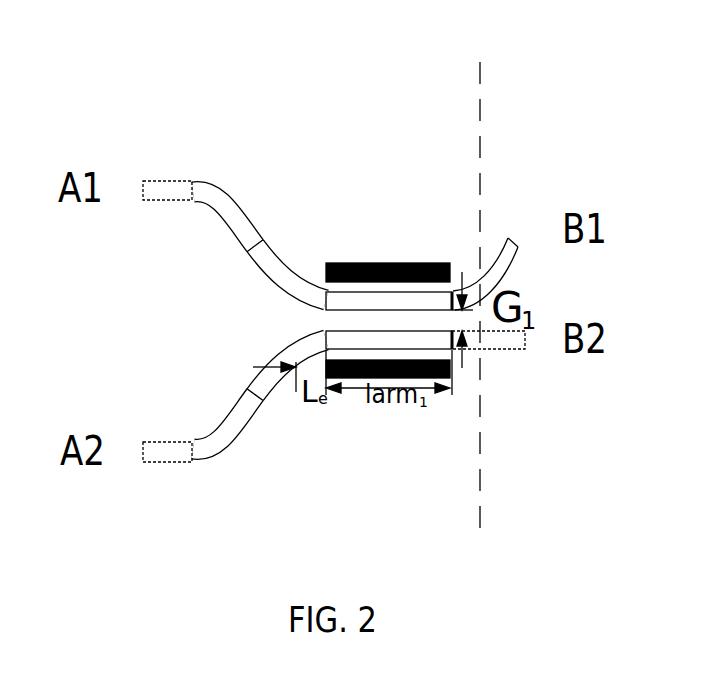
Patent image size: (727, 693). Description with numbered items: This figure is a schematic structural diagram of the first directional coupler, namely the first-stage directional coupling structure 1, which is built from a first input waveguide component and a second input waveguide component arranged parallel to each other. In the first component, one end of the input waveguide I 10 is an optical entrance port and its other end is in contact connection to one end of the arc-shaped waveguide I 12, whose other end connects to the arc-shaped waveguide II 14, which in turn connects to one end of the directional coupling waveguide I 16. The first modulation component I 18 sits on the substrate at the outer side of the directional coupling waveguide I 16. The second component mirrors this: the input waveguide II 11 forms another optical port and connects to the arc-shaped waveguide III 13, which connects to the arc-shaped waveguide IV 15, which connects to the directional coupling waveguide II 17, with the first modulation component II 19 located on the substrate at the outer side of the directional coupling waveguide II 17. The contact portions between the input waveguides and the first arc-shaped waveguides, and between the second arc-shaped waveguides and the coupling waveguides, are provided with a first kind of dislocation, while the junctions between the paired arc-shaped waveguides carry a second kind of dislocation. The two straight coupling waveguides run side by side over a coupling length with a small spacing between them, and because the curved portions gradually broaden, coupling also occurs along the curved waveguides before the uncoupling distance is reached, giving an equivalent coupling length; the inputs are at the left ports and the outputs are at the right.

The first-stage directional coupling structure 1 is at (360, 98).
The input waveguide I 10 is at (168, 177).
The input waveguide II 11 is at (168, 466).
The arc-shaped waveguide I 12 is at (231, 183).
The arc-shaped waveguide III 13 is at (241, 446).
The arc-shaped waveguide II 14 is at (280, 253).
The arc-shaped waveguide IV 15 is at (274, 391).
The directional coupling waveguide I 16 is at (359, 287).
The directional coupling waveguide II 17 is at (359, 346).
The first modulation component I 18 is at (427, 250).
The first modulation component II 19 is at (447, 392).